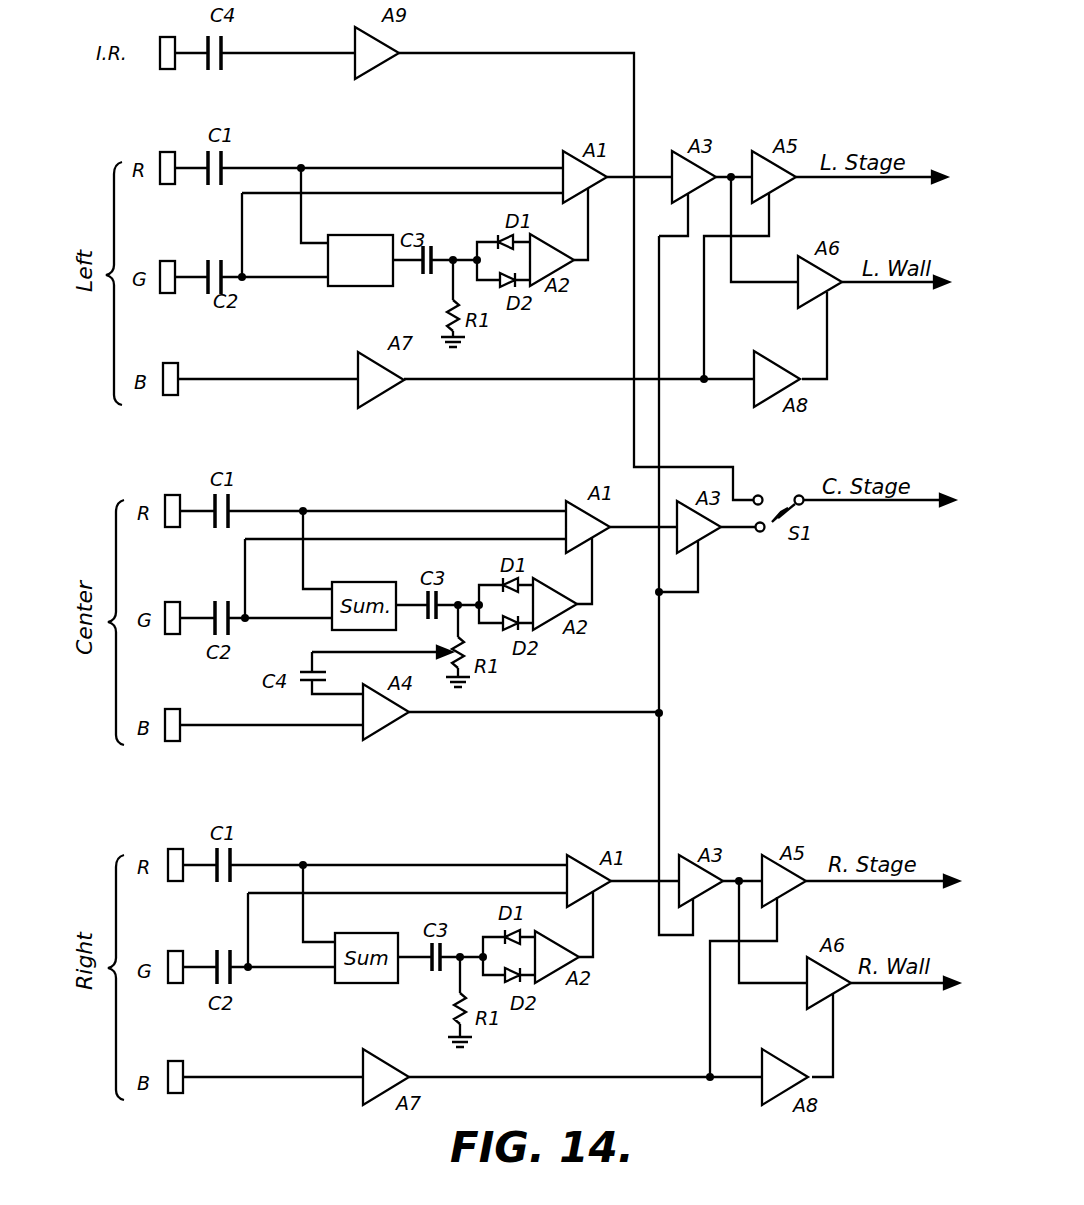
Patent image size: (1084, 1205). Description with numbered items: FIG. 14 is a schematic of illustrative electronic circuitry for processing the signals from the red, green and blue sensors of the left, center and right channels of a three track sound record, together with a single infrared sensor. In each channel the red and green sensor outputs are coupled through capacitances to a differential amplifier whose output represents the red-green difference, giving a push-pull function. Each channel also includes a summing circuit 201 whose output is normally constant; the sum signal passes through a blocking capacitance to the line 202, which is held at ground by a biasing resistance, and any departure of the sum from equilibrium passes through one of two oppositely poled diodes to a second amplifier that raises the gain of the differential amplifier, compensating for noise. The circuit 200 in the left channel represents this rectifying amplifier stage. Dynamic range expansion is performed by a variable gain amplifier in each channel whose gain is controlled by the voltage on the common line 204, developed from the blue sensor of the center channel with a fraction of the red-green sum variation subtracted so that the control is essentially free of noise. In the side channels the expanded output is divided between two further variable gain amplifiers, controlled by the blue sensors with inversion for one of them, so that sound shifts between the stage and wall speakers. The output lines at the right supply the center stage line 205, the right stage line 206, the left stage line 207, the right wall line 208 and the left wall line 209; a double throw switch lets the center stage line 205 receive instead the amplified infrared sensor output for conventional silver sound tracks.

The amplifier A2 circuit 200 is at (576, 262).
The summing circuit 201 is at (342, 287).
The line 202 is at (441, 257).
The common line 204 is at (661, 650).
The center stage output line 205 is at (884, 502).
The right stage output line 206 is at (866, 883).
The left stage output line 207 is at (872, 180).
The right wall output line 208 is at (889, 985).
The left wall output line 209 is at (884, 284).